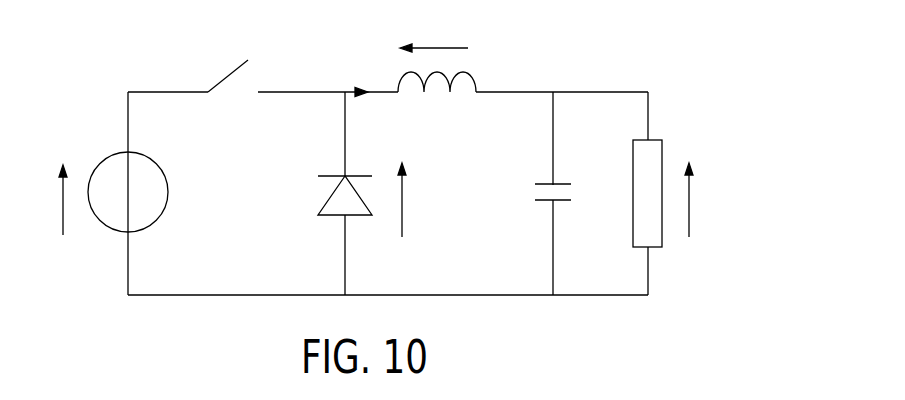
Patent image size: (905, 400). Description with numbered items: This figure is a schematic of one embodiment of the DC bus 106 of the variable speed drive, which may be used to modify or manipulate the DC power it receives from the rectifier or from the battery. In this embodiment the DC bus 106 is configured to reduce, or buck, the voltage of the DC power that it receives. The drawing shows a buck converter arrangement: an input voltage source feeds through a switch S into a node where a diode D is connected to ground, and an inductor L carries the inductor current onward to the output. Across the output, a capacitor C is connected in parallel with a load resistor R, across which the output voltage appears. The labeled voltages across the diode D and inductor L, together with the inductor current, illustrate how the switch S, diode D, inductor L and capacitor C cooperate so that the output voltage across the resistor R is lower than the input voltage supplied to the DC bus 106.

The DC bus 106 is at (600, 58).
The switch S is at (228, 89).
The diode D is at (332, 198).
The inductor L is at (437, 99).
The capacitor C is at (541, 193).
The resistor (load) R is at (637, 193).